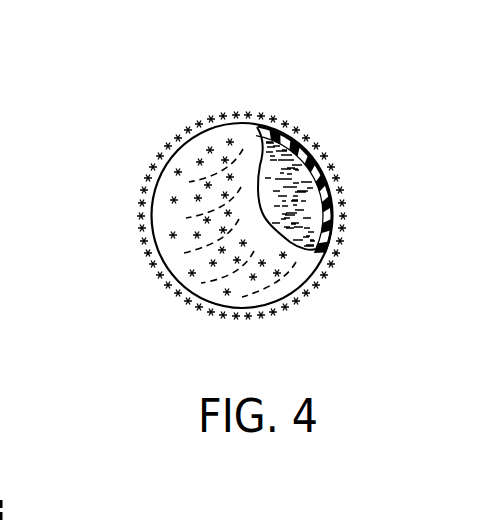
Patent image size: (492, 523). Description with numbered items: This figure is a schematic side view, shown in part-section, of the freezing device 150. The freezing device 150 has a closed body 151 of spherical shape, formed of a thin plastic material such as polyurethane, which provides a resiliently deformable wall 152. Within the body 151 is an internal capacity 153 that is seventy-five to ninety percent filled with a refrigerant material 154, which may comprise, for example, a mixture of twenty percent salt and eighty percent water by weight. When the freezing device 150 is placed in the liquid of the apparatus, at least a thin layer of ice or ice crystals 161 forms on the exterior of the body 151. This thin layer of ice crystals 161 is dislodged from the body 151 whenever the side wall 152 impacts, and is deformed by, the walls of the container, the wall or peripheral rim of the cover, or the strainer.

The freezing device 150 is at (306, 130).
The closed body 151 is at (333, 173).
The resiliently deformable wall 152 is at (321, 158).
The internal capacity 153 is at (271, 150).
The refrigerant material 154 is at (301, 226).
The ice crystals 161 is at (172, 199).